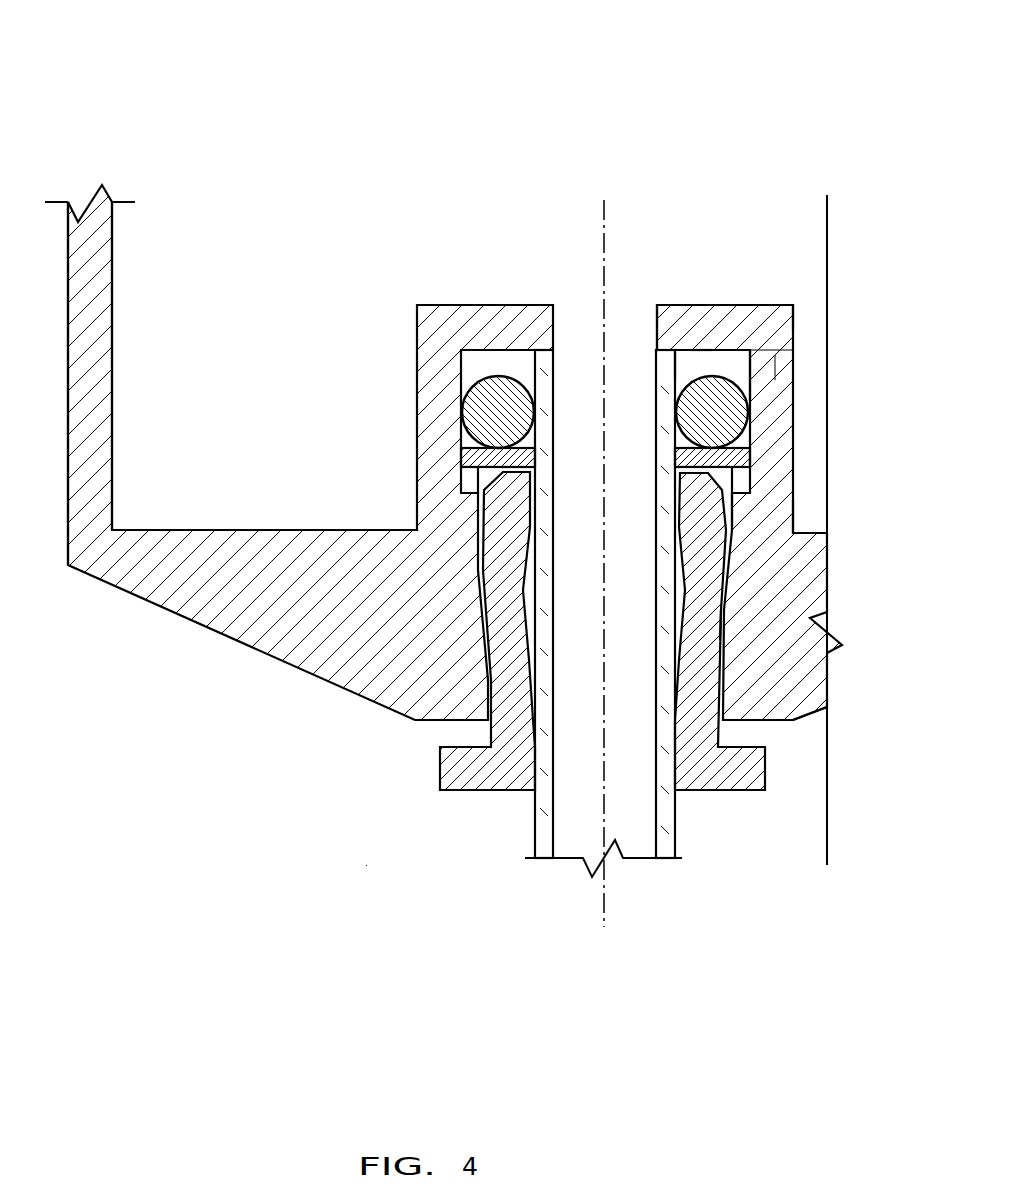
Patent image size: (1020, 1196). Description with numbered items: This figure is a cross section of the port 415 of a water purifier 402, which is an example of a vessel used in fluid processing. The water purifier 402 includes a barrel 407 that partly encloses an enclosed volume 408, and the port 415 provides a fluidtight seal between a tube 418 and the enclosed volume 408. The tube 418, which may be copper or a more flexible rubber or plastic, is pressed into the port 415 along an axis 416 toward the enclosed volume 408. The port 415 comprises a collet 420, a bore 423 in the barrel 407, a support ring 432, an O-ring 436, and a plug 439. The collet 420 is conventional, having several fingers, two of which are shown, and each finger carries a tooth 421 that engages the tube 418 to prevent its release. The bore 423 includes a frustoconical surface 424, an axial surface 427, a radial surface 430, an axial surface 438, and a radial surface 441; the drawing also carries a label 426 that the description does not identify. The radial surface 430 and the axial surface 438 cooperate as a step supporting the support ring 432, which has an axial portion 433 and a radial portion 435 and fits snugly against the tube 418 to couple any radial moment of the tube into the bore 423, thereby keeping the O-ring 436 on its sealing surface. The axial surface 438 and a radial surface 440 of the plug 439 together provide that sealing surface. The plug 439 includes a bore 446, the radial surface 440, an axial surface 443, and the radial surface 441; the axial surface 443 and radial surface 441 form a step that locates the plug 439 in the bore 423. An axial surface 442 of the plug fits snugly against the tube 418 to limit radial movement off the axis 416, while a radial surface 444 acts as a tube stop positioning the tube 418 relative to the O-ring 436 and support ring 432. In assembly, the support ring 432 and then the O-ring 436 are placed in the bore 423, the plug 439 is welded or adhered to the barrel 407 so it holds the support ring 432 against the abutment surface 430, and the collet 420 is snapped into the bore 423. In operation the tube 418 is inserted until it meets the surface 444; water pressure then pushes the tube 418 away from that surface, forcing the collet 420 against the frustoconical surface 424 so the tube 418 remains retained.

The water purifier 402 is at (270, 36).
The barrel 407 is at (112, 365).
The enclosed volume 408 is at (427, 208).
The port 415 is at (366, 866).
The axis 416 is at (604, 890).
The tube 418 is at (680, 822).
The collet 420 is at (765, 770).
The tooth 421 is at (657, 557).
The bore 423 is at (722, 712).
The frustoconical surface 424 is at (735, 650).
The shoulder 426 is at (723, 630).
The axial surface 427 is at (742, 530).
The radial surface 430 is at (793, 533).
The support ring 432 is at (748, 478).
The axial portion 433 is at (468, 478).
The radial portion 435 is at (493, 450).
The O-ring 436 is at (717, 413).
The axial surface 438 is at (763, 391).
The plug 439 is at (795, 316).
The radial surface 440 is at (750, 350).
The radial surface 441 is at (783, 367).
The axial surface 442 is at (700, 355).
The axial surface 443 is at (790, 338).
The radial surface 444 is at (683, 360).
The bore 446 is at (657, 335).